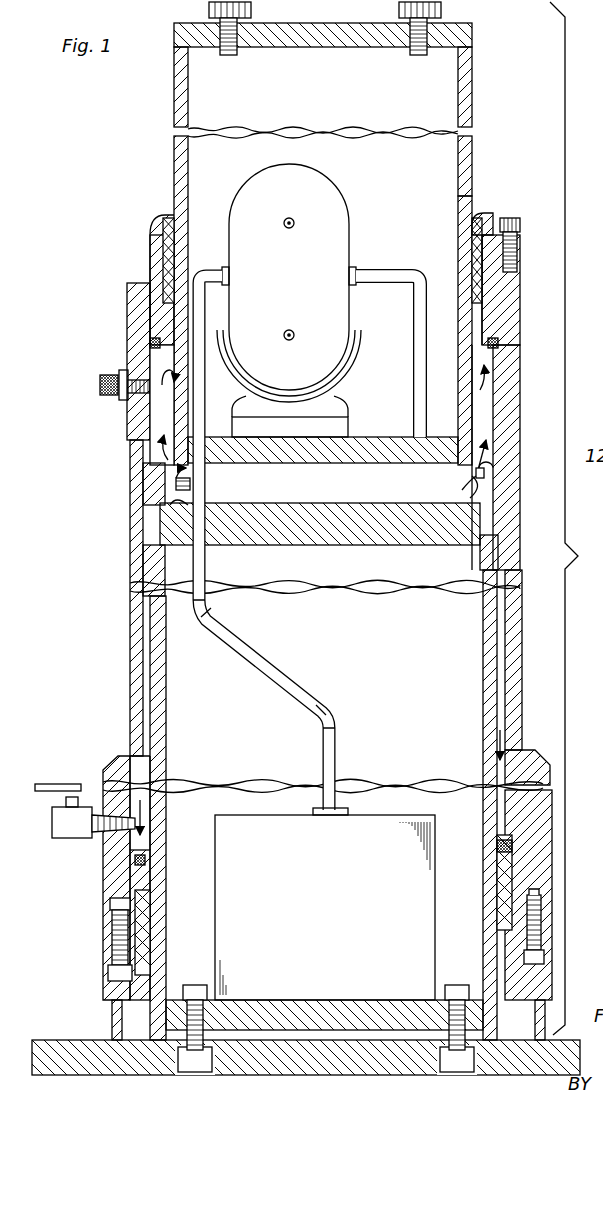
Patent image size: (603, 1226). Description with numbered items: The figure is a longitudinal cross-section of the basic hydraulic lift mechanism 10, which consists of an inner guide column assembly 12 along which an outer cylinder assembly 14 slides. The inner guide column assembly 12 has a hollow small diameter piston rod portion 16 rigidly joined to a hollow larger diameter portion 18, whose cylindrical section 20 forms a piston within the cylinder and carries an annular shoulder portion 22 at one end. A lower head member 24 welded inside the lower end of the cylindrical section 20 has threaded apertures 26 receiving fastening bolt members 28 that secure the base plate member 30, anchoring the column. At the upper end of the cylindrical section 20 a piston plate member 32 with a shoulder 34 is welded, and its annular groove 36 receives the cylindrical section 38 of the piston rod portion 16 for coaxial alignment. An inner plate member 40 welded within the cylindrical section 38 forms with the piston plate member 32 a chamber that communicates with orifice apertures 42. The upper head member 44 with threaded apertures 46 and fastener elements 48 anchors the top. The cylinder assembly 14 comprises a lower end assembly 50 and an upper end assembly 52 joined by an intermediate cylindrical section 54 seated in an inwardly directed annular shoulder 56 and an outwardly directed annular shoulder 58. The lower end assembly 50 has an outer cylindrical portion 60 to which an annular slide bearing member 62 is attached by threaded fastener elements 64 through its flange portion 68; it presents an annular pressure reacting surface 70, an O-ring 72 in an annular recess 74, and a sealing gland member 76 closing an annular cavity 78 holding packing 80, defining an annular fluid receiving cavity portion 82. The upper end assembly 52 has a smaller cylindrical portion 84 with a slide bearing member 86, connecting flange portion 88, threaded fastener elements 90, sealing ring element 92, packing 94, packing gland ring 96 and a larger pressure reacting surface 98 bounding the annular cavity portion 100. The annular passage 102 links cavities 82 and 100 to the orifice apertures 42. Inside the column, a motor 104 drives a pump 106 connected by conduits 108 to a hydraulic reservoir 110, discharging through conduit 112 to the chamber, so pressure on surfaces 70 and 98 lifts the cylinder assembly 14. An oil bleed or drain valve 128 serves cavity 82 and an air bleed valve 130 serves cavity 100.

The hydraulic lift mechanism 10 is at (152, 173).
The inner guide column assembly 12 is at (478, 156).
The outer cylinder assembly 14 is at (128, 508).
The small diameter piston rod portion 16 is at (464, 108).
The larger diameter portion 18 is at (490, 666).
The cylindrical section 20 is at (494, 702).
The annular shoulder portion 22 is at (500, 548).
The lower head member 24 is at (300, 1012).
The threaded apertures 26 is at (425, 1005).
The fastening bolt members 28 is at (466, 1062).
The base plate member 30 is at (124, 1060).
The piston plate member 32 is at (360, 527).
The shoulder 34 is at (482, 543).
The annular groove 36 is at (178, 520).
The cylindrical section 38 is at (466, 197).
The inner plate member 40 is at (366, 445).
The orifice apertures 42 is at (192, 484).
The upper head member 44 is at (270, 40).
The threaded apertures 46 is at (236, 50).
The fastener elements 48 is at (413, 50).
The lower end assembly 50 is at (540, 865).
The upper end assembly 52 is at (527, 347).
The intermediate cylindrical section 54 is at (510, 628).
The inwardly directed annular shoulder 56 is at (528, 762).
The outwardly directed annular shoulder 58 is at (504, 462).
The outer cylindrical portion 60 is at (530, 835).
The annular slide bearing member 62 is at (492, 890).
The threaded fastener elements 64 is at (542, 922).
The flange portion 68 is at (545, 954).
The annular pressure reacting surface 70 is at (500, 857).
The fluid pressure sealing O-ring 72 is at (515, 858).
The annular recess 74 is at (498, 870).
The sealing gland member 76 is at (140, 968).
The annular cavity 78 is at (140, 942).
The packing 80 is at (150, 918).
The annular fluid receiving cavity portion 82 is at (152, 770).
The cylindrical portion 84 is at (508, 322).
The slide bearing member 86 is at (500, 300).
The connecting flange portion 88 is at (517, 245).
The threaded fastener elements 90 is at (520, 228).
The sealing ring element 92 is at (499, 344).
The packing 94 is at (476, 262).
The packing gland ring 96 is at (490, 216).
The annular pressure reacting surface 98 is at (487, 383).
The annular cavity portion 100 is at (492, 413).
The annular passage 102 is at (506, 602).
The motor 104 is at (350, 345).
The pump 106 is at (332, 217).
The conduits 108 is at (206, 568).
The hydraulic reservoir 110 is at (398, 830).
The conduit 112 is at (414, 326).
The oil bleed or drain valve 128 is at (66, 828).
The air bleed valve 130 is at (106, 394).